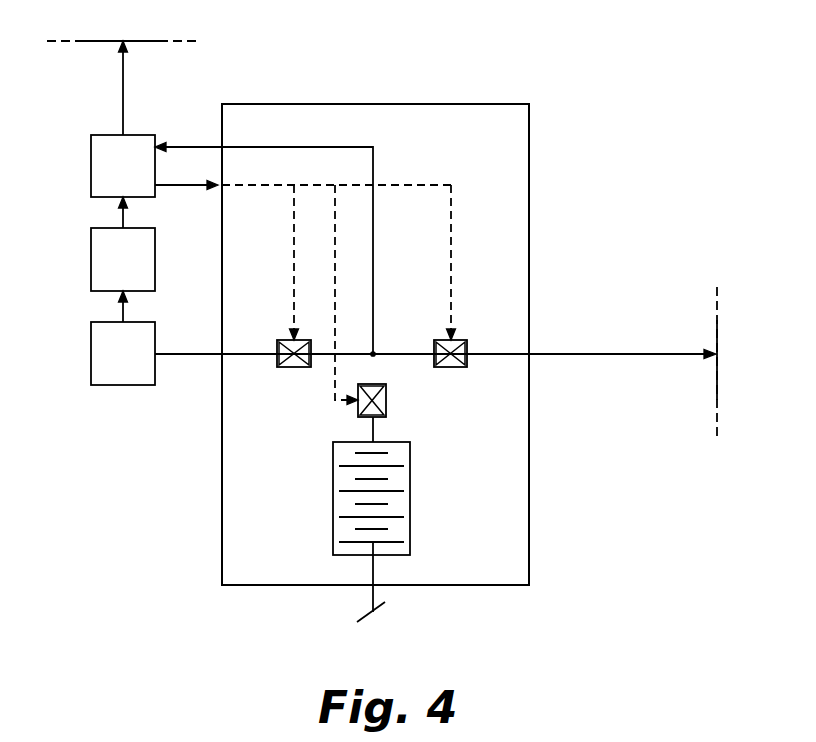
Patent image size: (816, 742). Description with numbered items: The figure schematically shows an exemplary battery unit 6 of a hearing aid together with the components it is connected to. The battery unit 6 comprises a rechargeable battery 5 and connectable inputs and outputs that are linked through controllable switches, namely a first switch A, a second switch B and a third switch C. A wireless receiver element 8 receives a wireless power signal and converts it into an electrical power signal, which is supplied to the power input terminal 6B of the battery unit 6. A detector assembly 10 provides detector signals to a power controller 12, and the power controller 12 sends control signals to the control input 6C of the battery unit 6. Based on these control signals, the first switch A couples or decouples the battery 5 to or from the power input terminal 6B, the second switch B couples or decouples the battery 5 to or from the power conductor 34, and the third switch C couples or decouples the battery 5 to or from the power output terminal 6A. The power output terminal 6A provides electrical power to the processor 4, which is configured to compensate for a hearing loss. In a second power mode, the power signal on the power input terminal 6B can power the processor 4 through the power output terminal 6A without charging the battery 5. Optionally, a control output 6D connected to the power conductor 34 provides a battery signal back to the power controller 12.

The processor 4 is at (394, 226).
The rechargeable battery 5 is at (410, 511).
The battery unit 6 is at (393, 103).
The power output terminal 6A is at (531, 353).
The power input terminal 6B is at (218, 355).
The control input 6C is at (213, 190).
The control output 6D is at (222, 147).
The wireless receiver element 8 is at (123, 338).
The detector assembly 10 is at (123, 244).
The power controller 12 is at (123, 119).
The power conductor 34 is at (405, 352).
The first switch A is at (291, 367).
The second switch B is at (386, 402).
The third switch C is at (448, 367).